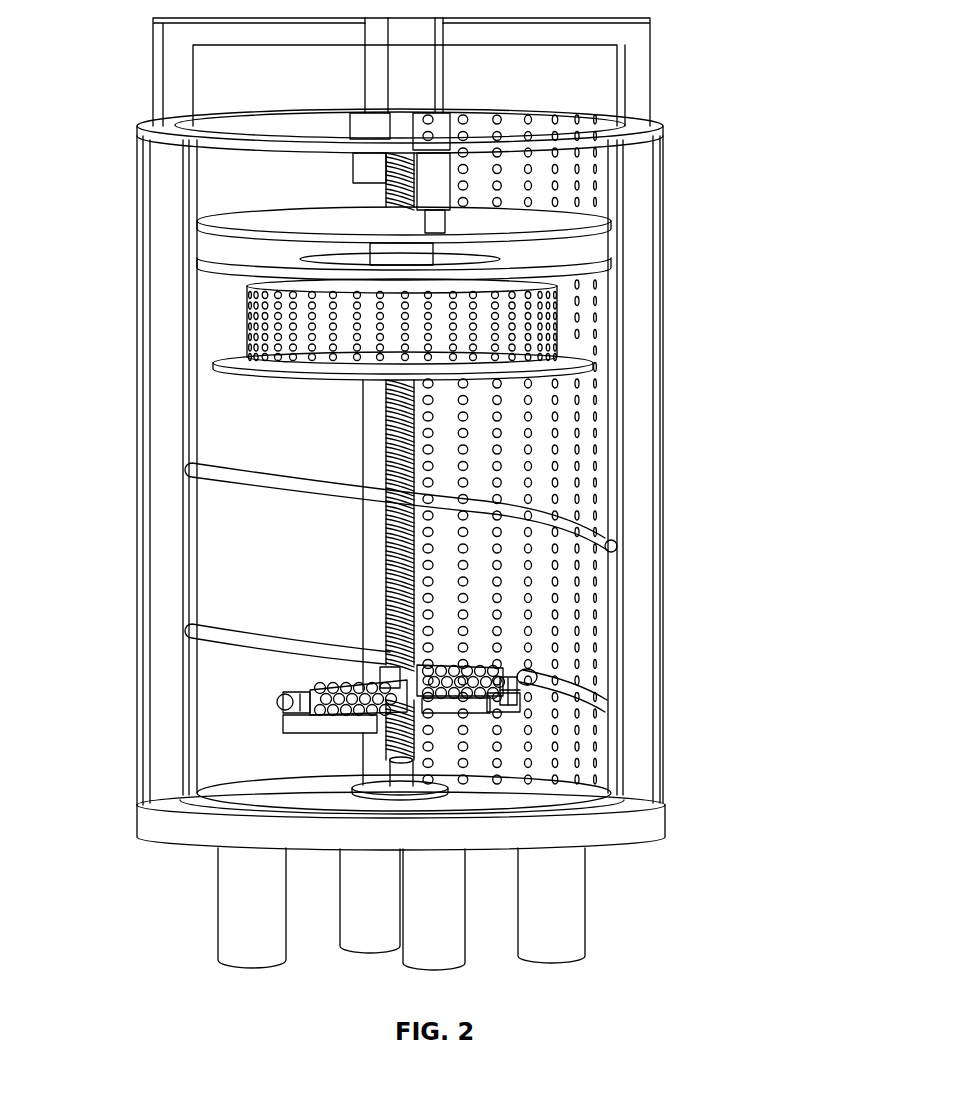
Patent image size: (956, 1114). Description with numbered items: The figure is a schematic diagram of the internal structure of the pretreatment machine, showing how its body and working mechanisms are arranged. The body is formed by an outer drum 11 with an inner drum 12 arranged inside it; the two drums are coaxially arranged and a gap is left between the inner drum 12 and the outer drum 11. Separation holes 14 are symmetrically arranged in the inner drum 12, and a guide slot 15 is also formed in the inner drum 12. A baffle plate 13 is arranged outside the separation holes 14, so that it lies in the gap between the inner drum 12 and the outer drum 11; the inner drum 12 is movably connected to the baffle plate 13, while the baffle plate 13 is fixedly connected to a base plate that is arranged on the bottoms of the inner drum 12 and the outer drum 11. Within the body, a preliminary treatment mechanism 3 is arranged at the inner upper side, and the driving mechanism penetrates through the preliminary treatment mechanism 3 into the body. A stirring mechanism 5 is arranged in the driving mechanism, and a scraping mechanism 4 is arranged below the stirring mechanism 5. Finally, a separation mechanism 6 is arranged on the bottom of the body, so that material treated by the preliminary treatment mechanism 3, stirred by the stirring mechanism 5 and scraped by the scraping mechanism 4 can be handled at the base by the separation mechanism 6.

The preliminary treatment mechanism 3 is at (332, 310).
The scraping mechanism 4 is at (347, 730).
The stirring mechanism 5 is at (287, 683).
The separation mechanism 6 is at (628, 827).
The outer drum 11 is at (662, 345).
The inner drum 12 is at (610, 330).
The baffle plate 13 is at (617, 415).
The separation holes 14 is at (603, 503).
The guide slot 15 is at (617, 546).